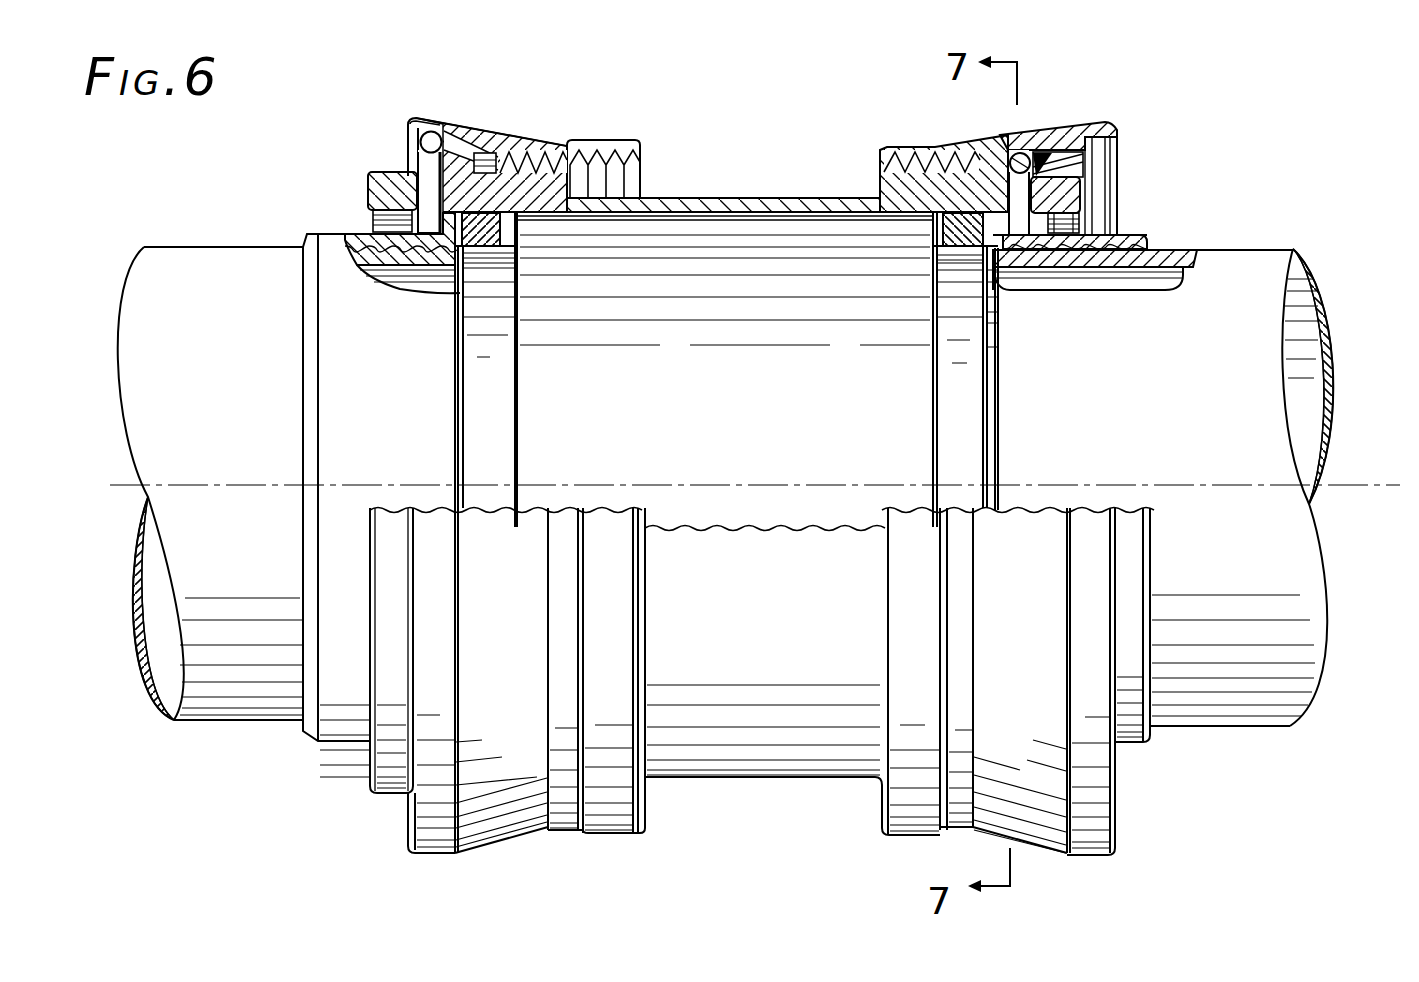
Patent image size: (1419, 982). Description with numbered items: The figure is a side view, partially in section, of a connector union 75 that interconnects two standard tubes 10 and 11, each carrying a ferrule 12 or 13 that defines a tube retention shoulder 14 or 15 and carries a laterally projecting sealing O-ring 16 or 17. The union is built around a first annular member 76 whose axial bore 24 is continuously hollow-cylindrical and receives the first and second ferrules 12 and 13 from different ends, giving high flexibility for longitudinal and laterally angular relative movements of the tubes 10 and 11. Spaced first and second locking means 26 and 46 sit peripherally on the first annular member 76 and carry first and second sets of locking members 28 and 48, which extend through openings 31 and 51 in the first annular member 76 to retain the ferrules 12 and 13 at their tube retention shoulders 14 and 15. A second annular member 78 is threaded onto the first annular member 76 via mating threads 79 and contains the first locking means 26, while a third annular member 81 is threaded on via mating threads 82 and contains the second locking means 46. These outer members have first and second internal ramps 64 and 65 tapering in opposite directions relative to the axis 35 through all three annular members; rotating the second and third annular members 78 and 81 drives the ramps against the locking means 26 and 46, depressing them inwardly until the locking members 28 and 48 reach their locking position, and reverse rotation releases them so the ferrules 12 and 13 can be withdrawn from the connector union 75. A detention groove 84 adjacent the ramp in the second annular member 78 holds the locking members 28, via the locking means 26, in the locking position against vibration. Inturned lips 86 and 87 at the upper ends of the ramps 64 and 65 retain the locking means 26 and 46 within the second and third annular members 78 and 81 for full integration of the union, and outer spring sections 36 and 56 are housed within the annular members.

The standard tube 10 is at (1175, 425).
The standard tube 11 is at (238, 405).
The ferrule 12 is at (932, 397).
The ferrule 13 is at (518, 402).
The tube retention shoulder 14 is at (1005, 240).
The tube retention shoulder 15 is at (438, 232).
The sealing O-ring 16 is at (933, 245).
The sealing O-ring 17 is at (515, 222).
The axial bore 24 is at (760, 442).
The first locking means 26 is at (1036, 170).
The first set of locking members 28 is at (1053, 248).
The opening 31 is at (1036, 193).
The axis 35 is at (1386, 492).
The outer spring section 36 is at (1000, 153).
The second locking means 46 is at (405, 160).
The second set of locking members 48 is at (408, 232).
The opening 51 is at (372, 192).
The outer spring section 56 is at (440, 146).
The first internal ramp 64 is at (1067, 152).
The second internal ramp 65 is at (498, 153).
The connector union 75 is at (756, 802).
The first annular member 76 is at (612, 148).
The second annular member 78 is at (1113, 128).
The mating threads 79 is at (903, 157).
The third annular member 81 is at (425, 118).
The mating threads 82 is at (545, 150).
The detention groove 84 is at (1023, 152).
The inturned lip 86 is at (1118, 142).
The inturned lip 87 is at (405, 137).